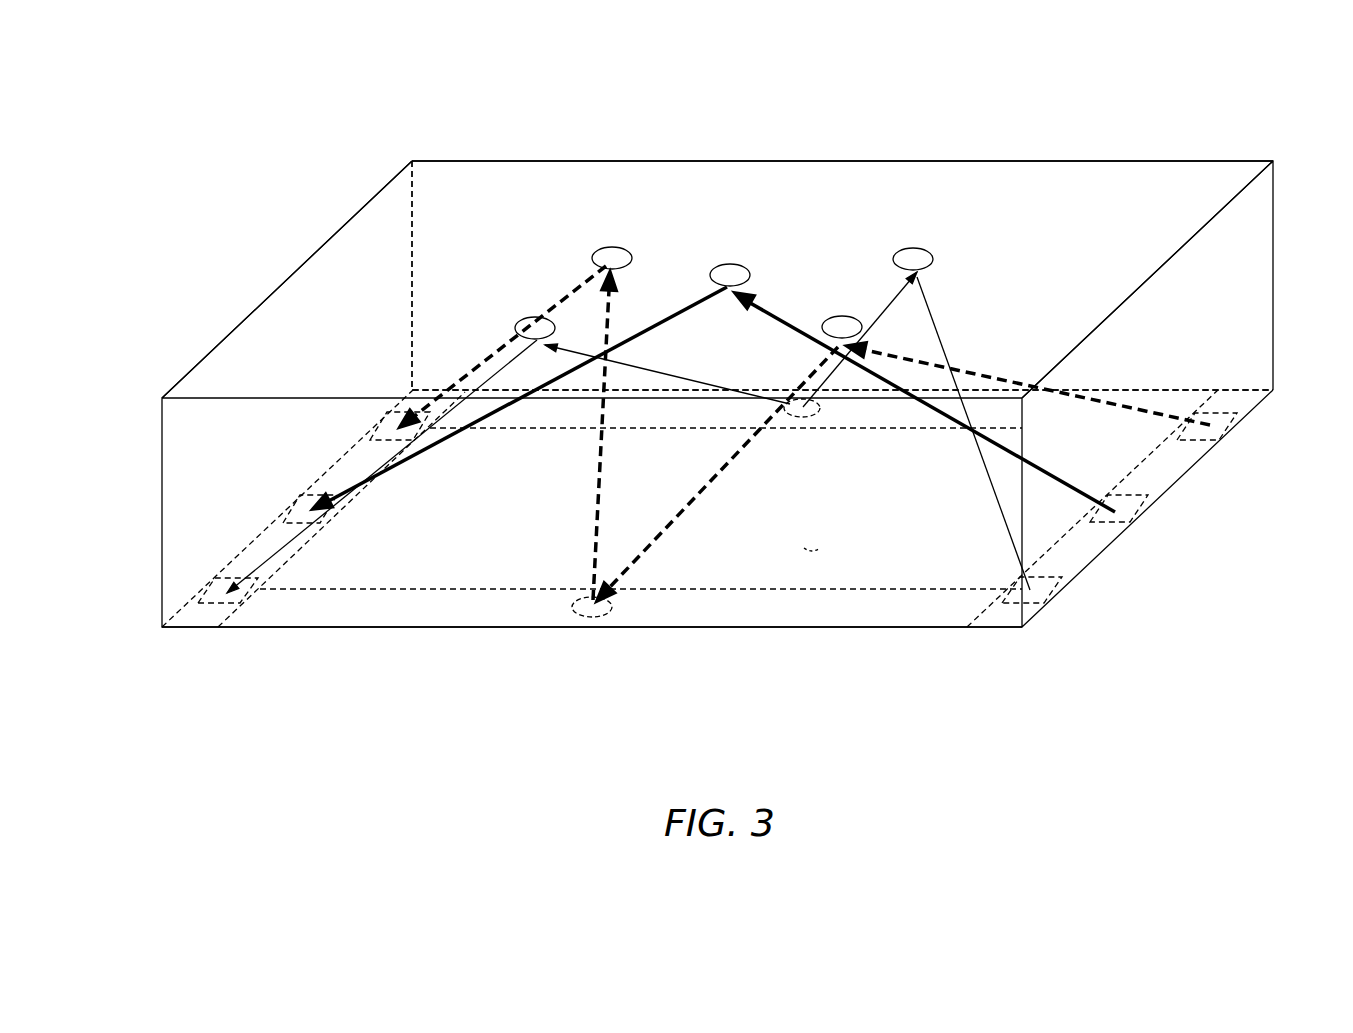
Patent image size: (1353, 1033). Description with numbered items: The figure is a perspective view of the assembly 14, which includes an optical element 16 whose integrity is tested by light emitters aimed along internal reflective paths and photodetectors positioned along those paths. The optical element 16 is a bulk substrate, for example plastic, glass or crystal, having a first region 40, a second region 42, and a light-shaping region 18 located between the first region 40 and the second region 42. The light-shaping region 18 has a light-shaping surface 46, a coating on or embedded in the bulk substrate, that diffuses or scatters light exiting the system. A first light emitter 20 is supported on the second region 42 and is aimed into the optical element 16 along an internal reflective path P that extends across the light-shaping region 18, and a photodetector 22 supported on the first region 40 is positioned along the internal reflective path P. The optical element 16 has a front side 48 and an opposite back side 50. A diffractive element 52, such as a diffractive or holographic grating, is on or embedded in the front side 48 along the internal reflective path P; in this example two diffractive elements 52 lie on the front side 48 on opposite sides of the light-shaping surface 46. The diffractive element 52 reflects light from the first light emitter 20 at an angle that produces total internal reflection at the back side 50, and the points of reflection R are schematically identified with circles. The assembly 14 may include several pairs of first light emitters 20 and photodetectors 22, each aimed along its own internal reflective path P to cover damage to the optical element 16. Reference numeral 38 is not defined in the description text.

The assembly 14 is at (957, 92).
The optical element 16 is at (1036, 160).
The light-shaping region 18 is at (692, 228).
The first light emitter 20 is at (1230, 427).
The photodetector 22 is at (372, 430).
The front edge strip 38 is at (551, 428).
The first region 40 is at (1228, 178).
The second region 42 is at (433, 158).
The light-shaping surface 46 is at (812, 535).
The front side 48 is at (365, 631).
The back side 50 is at (498, 197).
The diffractive element 52 is at (892, 412).
The points of reflection R is at (528, 318).
The internal reflective path P is at (1097, 393).